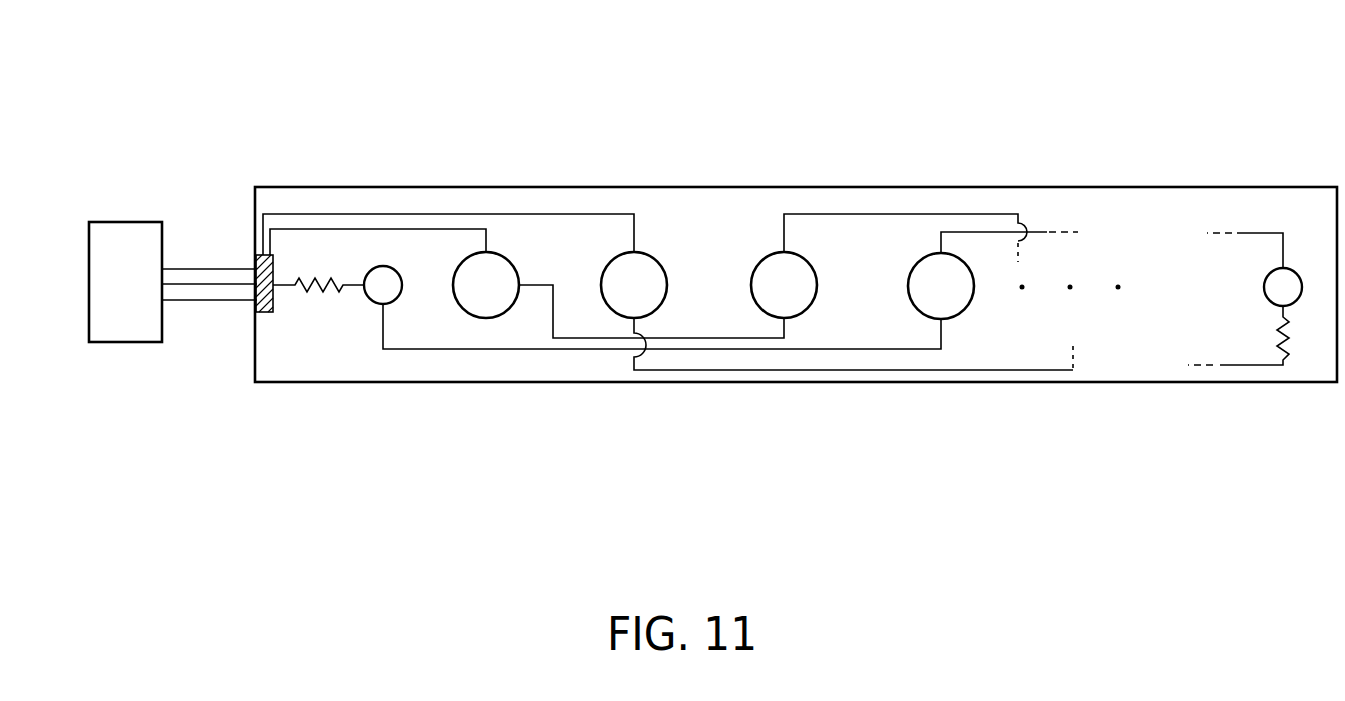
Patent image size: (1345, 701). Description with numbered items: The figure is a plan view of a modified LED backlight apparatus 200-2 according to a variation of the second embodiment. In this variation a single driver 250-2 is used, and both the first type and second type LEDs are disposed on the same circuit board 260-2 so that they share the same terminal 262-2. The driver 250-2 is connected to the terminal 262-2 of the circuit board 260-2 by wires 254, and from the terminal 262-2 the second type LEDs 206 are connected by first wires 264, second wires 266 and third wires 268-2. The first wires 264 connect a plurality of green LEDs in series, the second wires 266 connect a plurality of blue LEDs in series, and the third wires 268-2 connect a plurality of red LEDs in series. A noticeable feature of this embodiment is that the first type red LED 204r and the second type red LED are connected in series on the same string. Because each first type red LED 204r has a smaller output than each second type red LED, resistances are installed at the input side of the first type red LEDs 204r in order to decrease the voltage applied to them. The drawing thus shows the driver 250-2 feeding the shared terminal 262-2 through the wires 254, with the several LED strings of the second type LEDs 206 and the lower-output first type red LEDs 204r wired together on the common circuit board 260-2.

The modified LED backlight apparatus 200-2 is at (778, 37).
The single driver 250-2 is at (112, 221).
The wires 254 is at (209, 266).
The circuit board 260-2 is at (1066, 186).
The terminal 262-2 is at (265, 318).
The first wires 264 is at (385, 228).
The second wires 266 is at (535, 213).
The third wires 268-2 is at (413, 350).
The first type red LED 204r is at (370, 307).
The second type LEDs 206 is at (920, 303).